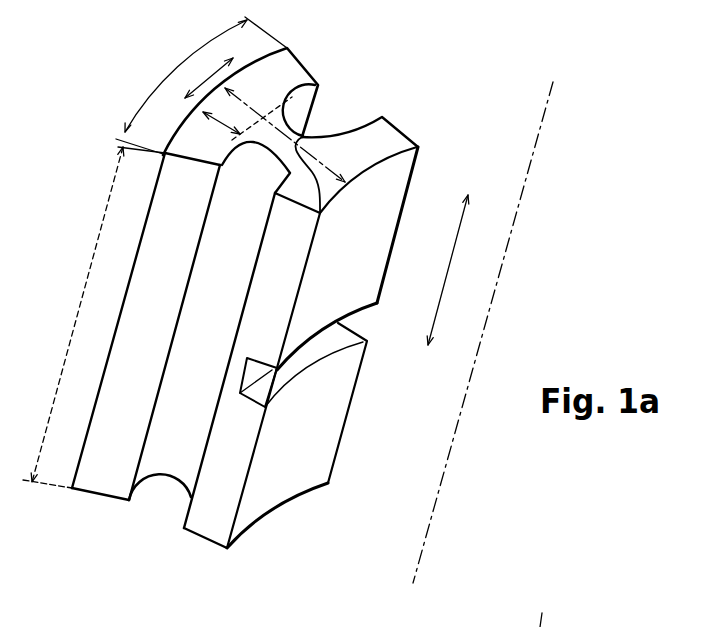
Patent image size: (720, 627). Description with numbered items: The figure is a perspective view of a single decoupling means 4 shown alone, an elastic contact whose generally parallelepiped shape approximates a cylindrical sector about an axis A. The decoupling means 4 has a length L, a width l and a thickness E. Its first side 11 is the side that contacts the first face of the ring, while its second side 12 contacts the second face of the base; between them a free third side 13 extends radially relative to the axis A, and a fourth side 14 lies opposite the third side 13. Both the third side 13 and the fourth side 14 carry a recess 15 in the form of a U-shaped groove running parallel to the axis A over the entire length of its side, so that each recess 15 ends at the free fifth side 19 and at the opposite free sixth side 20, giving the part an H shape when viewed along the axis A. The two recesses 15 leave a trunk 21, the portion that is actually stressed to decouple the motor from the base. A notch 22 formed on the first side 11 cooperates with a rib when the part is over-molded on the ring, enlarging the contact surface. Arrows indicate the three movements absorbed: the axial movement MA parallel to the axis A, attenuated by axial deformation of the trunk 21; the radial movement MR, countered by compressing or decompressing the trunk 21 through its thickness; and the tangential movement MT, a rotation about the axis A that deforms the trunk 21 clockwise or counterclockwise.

The decoupling means 4 is at (132, 570).
The first side 11 is at (357, 251).
The second side 12 is at (150, 205).
The third side 13 is at (209, 335).
The fourth side 14 is at (314, 68).
The recess 15 is at (345, 104).
The fifth side 19 is at (390, 133).
The sixth side 20 is at (200, 538).
The trunk 21 is at (327, 204).
The notch 22 is at (265, 383).
The axis A is at (547, 103).
The axial movement MA is at (448, 273).
The tangential movement MT is at (207, 73).
The radial movement MR is at (210, 128).
The length L is at (94, 317).
The width l is at (201, 85).
The thickness E is at (408, 184).